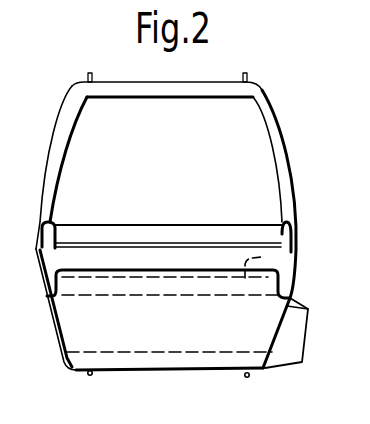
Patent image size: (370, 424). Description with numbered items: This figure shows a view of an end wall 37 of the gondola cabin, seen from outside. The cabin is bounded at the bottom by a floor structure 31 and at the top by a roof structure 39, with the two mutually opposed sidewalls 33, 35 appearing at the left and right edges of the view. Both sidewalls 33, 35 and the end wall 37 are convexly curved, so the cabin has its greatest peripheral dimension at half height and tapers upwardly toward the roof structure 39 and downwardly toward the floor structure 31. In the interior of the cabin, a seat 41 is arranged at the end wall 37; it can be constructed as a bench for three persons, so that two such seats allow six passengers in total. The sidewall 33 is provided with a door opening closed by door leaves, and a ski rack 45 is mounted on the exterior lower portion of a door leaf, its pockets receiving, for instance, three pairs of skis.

The floor structure 31 is at (210, 372).
The sidewall 33 is at (288, 158).
The sidewall 35 is at (47, 157).
The end wall 37 is at (248, 145).
The roof structure 39 is at (218, 82).
The seat 41 is at (262, 257).
The ski rack 45 is at (307, 322).